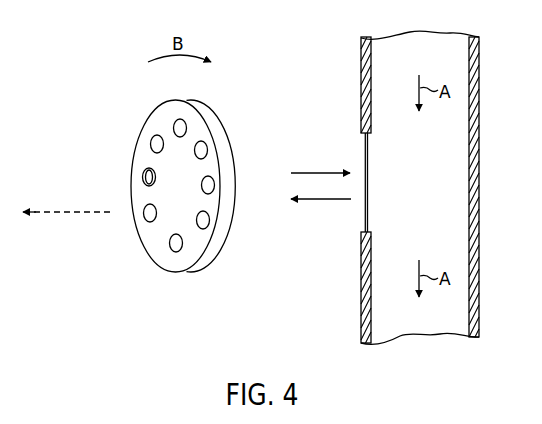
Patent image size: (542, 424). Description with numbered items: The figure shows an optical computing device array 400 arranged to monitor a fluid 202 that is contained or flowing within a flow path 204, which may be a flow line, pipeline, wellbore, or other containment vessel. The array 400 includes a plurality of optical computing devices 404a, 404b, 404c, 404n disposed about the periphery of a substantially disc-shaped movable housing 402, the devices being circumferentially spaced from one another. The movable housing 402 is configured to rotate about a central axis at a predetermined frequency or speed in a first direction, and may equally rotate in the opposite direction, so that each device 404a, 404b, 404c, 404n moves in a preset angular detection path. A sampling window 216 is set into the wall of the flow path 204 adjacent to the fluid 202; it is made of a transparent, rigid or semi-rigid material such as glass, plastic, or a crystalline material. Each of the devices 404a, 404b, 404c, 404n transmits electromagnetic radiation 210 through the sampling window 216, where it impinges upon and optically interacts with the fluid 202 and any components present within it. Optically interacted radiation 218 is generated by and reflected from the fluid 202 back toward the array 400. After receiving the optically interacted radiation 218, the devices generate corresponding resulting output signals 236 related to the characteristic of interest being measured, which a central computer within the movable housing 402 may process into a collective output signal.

The optical computing device array 400 is at (85, 47).
The movable housing 402 is at (182, 271).
The optical computing device 404n is at (174, 124).
The optical computing device 404a is at (207, 150).
The optical computing device 404b is at (214, 185).
The optical computing device 404c is at (206, 228).
The resulting output signal 236 is at (72, 212).
The electromagnetic radiation 210 is at (309, 173).
The optically interacted radiation 218 is at (325, 200).
The flow path 204 is at (479, 90).
The sampling window 216 is at (367, 141).
The fluid 202 is at (433, 198).